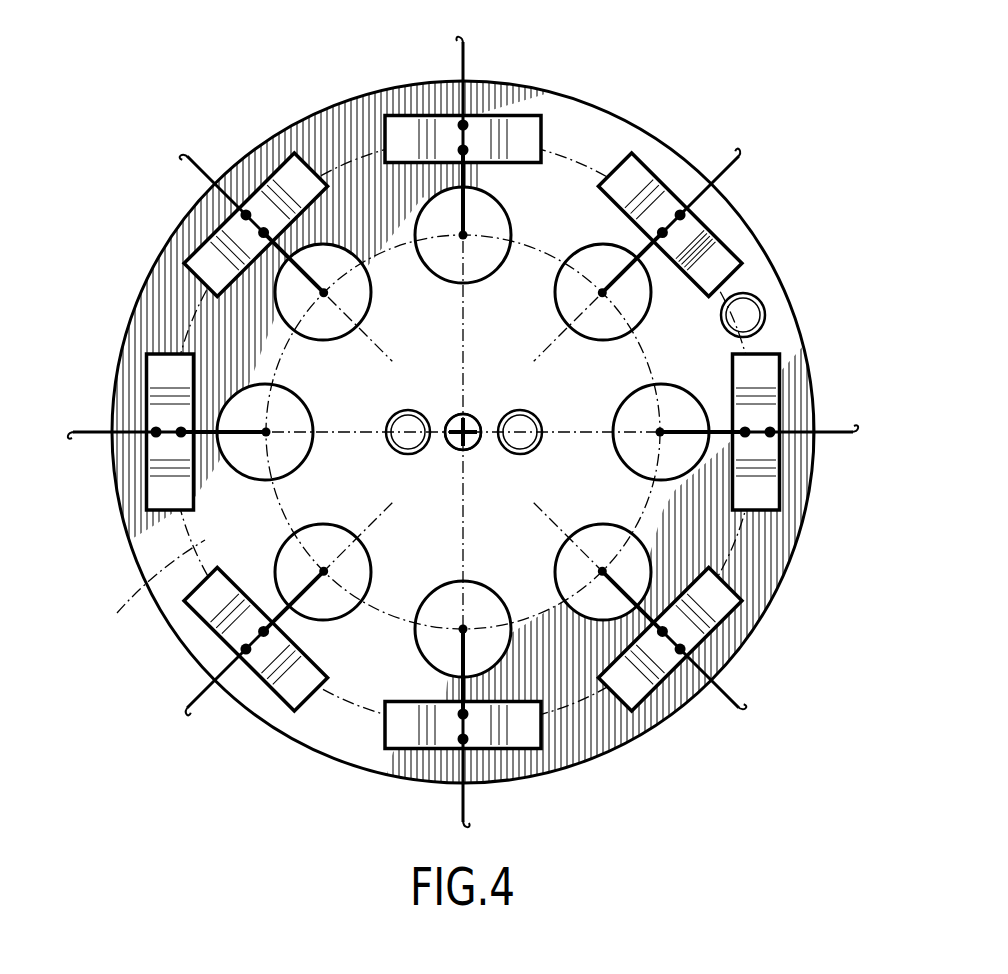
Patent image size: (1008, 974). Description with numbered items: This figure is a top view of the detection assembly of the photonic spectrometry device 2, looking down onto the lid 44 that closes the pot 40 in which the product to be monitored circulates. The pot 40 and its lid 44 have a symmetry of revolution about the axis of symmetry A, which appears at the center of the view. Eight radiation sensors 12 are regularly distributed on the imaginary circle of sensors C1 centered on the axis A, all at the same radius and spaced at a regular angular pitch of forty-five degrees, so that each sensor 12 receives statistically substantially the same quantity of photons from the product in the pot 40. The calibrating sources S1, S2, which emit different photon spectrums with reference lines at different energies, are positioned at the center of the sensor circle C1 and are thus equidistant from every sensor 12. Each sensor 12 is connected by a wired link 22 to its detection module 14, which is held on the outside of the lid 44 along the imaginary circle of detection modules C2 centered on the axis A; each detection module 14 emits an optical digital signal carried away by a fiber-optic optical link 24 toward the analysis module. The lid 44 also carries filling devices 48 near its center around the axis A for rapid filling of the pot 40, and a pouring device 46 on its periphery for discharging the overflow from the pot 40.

The photonic spectrometry device 2 is at (779, 98).
The radiation sensor 12 is at (440, 260).
The detection module 14 is at (528, 123).
The wired link 22 is at (433, 203).
The optical link 24 is at (460, 63).
The pot 40 is at (653, 121).
The lid 44 is at (723, 212).
The pouring device 46 is at (758, 305).
The filling device 48 is at (407, 450).
The circle of sensors C1 is at (520, 260).
The circle of detection modules C2 is at (132, 608).
The axis of symmetry A is at (468, 417).
The calibrating source S1 is at (457, 415).
The calibrating source S2 is at (463, 432).